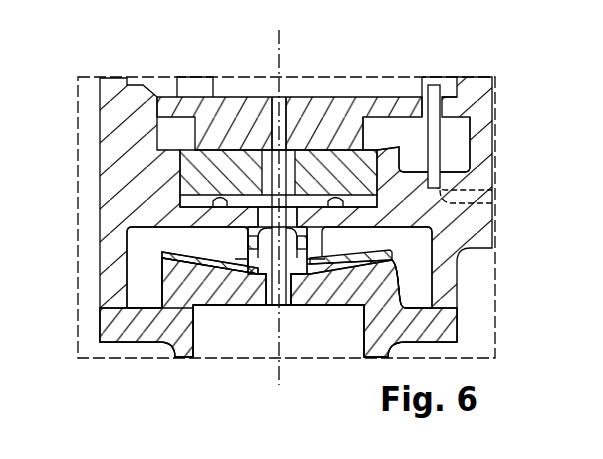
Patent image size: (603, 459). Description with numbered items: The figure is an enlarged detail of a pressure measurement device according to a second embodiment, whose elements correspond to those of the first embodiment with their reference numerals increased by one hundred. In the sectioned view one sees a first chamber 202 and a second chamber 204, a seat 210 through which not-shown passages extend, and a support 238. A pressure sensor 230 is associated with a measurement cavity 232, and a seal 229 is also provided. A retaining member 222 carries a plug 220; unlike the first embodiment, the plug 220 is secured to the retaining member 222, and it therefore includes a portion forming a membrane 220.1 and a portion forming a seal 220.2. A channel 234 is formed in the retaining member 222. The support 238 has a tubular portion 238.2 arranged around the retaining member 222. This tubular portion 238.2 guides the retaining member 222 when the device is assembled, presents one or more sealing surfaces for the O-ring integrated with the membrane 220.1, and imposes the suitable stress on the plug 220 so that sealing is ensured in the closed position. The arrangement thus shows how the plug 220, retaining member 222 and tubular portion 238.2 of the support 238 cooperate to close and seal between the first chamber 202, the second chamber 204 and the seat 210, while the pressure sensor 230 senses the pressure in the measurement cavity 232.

The first chamber 202 is at (213, 354).
The second chamber 204 is at (131, 241).
The seat 210 is at (350, 285).
The plug 220 is at (163, 254).
The membrane 220.1 is at (393, 254).
The seal 220.2 is at (323, 243).
The retaining member 222 is at (170, 276).
The seal 229 is at (366, 148).
The pressure sensor 230 is at (182, 128).
The measurement cavity 232 is at (289, 173).
The channel 234 is at (271, 307).
The support 238 is at (118, 185).
The tubular portion 238.2 is at (240, 240).